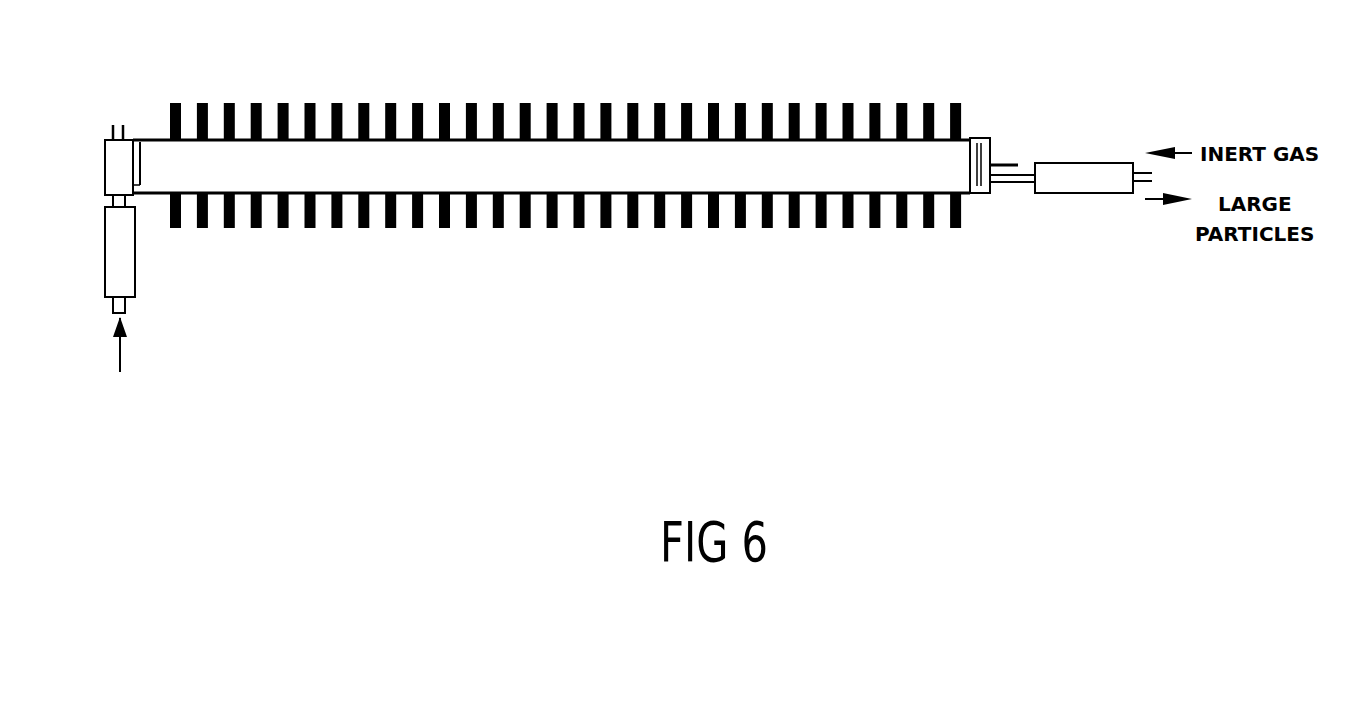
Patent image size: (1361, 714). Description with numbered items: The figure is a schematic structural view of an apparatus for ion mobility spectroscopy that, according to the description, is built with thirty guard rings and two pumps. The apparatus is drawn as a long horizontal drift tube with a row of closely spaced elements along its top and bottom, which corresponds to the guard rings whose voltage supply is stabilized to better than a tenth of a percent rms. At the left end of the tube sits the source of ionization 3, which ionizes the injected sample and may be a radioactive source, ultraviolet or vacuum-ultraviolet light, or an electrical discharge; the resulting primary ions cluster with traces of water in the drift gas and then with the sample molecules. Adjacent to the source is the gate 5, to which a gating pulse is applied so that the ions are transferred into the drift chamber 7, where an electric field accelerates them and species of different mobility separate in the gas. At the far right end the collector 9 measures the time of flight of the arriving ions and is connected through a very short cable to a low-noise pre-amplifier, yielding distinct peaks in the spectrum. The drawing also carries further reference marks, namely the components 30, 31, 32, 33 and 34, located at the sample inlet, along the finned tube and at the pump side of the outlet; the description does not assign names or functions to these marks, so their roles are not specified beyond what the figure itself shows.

The source of ionization 3 is at (118, 176).
The gate 5 is at (138, 140).
The drift chamber 7 is at (403, 180).
The collector 9 is at (985, 148).
The sample valve 30 is at (123, 277).
The inlet port 31 is at (133, 164).
The heating fins 32 is at (440, 103).
The end cap 33 is at (970, 138).
The pump 34 is at (1093, 212).